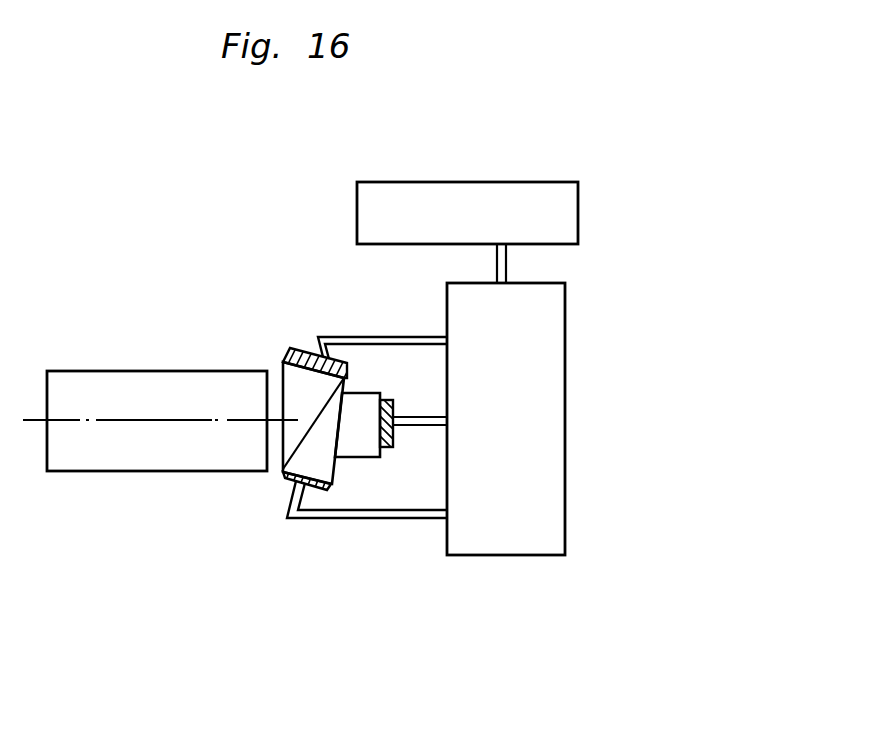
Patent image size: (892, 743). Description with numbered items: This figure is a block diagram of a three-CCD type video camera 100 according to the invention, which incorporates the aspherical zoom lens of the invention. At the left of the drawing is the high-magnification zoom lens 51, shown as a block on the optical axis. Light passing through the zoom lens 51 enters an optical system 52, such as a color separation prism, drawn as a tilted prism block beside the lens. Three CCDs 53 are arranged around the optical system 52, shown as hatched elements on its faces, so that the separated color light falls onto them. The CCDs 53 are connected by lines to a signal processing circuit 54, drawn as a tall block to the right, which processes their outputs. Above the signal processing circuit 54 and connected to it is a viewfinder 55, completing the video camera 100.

The high-magnification zoom lens 51 is at (147, 385).
The optical system 52 is at (357, 410).
The CCDs 53 is at (300, 348).
The signal processing circuit 54 is at (547, 368).
The viewfinder 55 is at (495, 203).
The video camera 100 is at (357, 594).